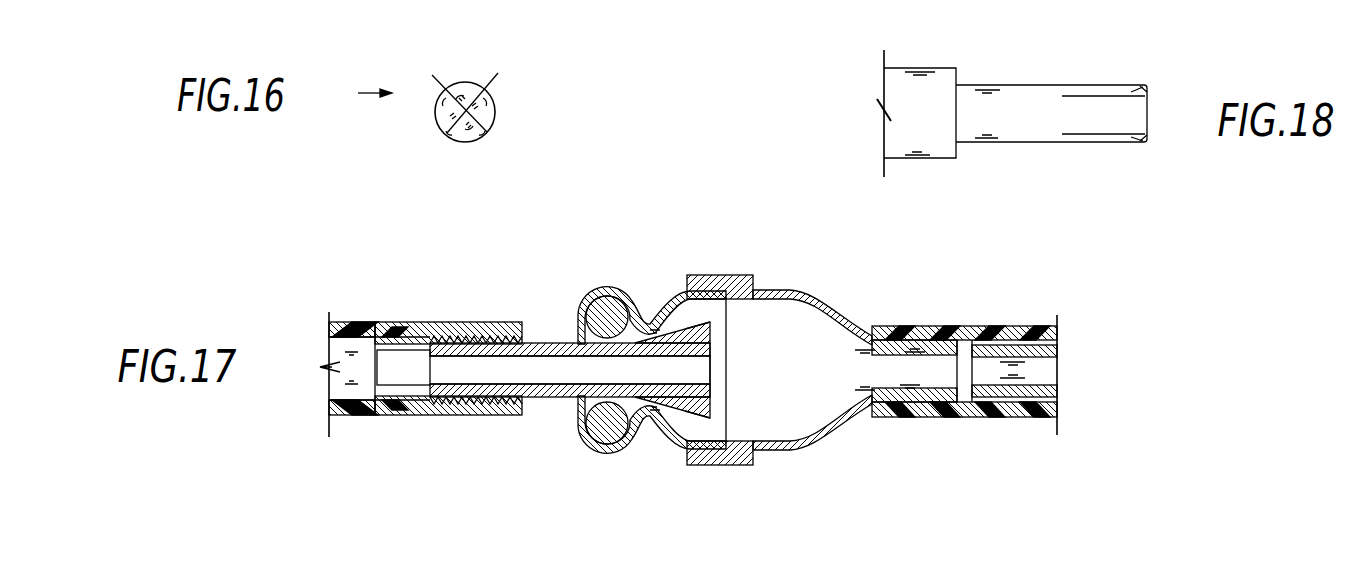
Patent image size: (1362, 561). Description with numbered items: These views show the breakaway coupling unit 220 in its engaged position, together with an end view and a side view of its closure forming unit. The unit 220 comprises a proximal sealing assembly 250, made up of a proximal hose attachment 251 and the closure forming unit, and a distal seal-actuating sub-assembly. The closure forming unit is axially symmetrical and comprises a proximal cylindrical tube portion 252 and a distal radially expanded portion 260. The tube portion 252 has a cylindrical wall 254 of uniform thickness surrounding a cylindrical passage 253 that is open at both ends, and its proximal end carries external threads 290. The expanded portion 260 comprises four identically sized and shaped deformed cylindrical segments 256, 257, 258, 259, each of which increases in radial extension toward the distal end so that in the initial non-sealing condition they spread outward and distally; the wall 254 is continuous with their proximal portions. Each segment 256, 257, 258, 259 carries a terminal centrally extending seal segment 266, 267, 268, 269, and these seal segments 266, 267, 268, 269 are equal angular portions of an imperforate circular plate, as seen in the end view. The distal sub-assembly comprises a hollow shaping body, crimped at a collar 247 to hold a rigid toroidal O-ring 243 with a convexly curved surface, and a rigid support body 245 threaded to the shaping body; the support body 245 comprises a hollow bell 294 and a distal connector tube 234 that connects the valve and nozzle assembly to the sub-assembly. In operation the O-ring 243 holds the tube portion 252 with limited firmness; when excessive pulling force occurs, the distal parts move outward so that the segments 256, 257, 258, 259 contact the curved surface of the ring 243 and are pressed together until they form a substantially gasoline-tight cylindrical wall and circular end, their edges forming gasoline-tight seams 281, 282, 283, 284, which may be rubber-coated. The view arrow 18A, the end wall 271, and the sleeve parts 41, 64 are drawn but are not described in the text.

In FIG. 16, the section view indicator 18A is at (357, 92).
In FIG. 16, the terminal seal segment 266 is at (464, 102).
In FIG. 17, the terminal seal segment 266 is at (713, 337).
In FIG. 16, the terminal seal segment 267 is at (485, 107).
In FIG. 17, the terminal seal segment 267 is at (713, 371).
In FIG. 16, the terminal seal segment 268 is at (477, 133).
In FIG. 17, the terminal seal segment 268 is at (713, 405).
In FIG. 16, the terminal seal segment 269 is at (443, 107).
In FIG. 16, the gasoline-tight seam 281 is at (444, 97).
In FIG. 18, the gasoline-tight seam 281 is at (1147, 92).
In FIG. 16, the gasoline-tight seam 282 is at (489, 97).
In FIG. 16, the gasoline-tight seam 283 is at (477, 127).
In FIG. 16, the gasoline-tight seam 284 is at (450, 132).
In FIG. 18, the gasoline-tight seam 284 is at (1143, 140).
In FIG. 17, the breakaway coupling unit 220 is at (1048, 480).
In FIG. 17, the distal connector tube 234 is at (887, 347).
In FIG. 17, the O-ring 243 is at (613, 292).
In FIG. 17, the support body 245 is at (808, 268).
In FIG. 17, the crimp or collar 247 is at (638, 310).
In FIG. 17, the proximal sealing assembly 250 is at (750, 278).
In FIG. 17, the cylindrical passage 253 is at (551, 366).
In FIG. 17, the cylindrical wall 254 is at (556, 398).
In FIG. 18, the deformed cylindrical segment 256 is at (1136, 92).
In FIG. 17, the deformed cylindrical segment 256 is at (694, 325).
In FIG. 17, the deformed cylindrical segment 257 is at (685, 372).
In FIG. 18, the deformed cylindrical segment 258 is at (1133, 141).
In FIG. 17, the deformed cylindrical segment 258 is at (688, 410).
In FIG. 17, the distal radially expanded portion 260 is at (763, 320).
In FIG. 17, the end wall 271 is at (1043, 323).
In FIG. 17, the external threads 290 is at (435, 361).
In FIG. 17, the bell 294 is at (812, 300).
In FIG. 17, the outer sleeve 41 is at (1047, 392).
In FIG. 17, the inner tube 64 is at (1062, 372).
In FIG. 18, the proximal hose attachment 251 is at (934, 148).
In FIG. 18, the proximal cylindrical tube portion 252 is at (997, 136).
In FIG. 18, the deformed cylindrical segment 259 is at (1137, 117).